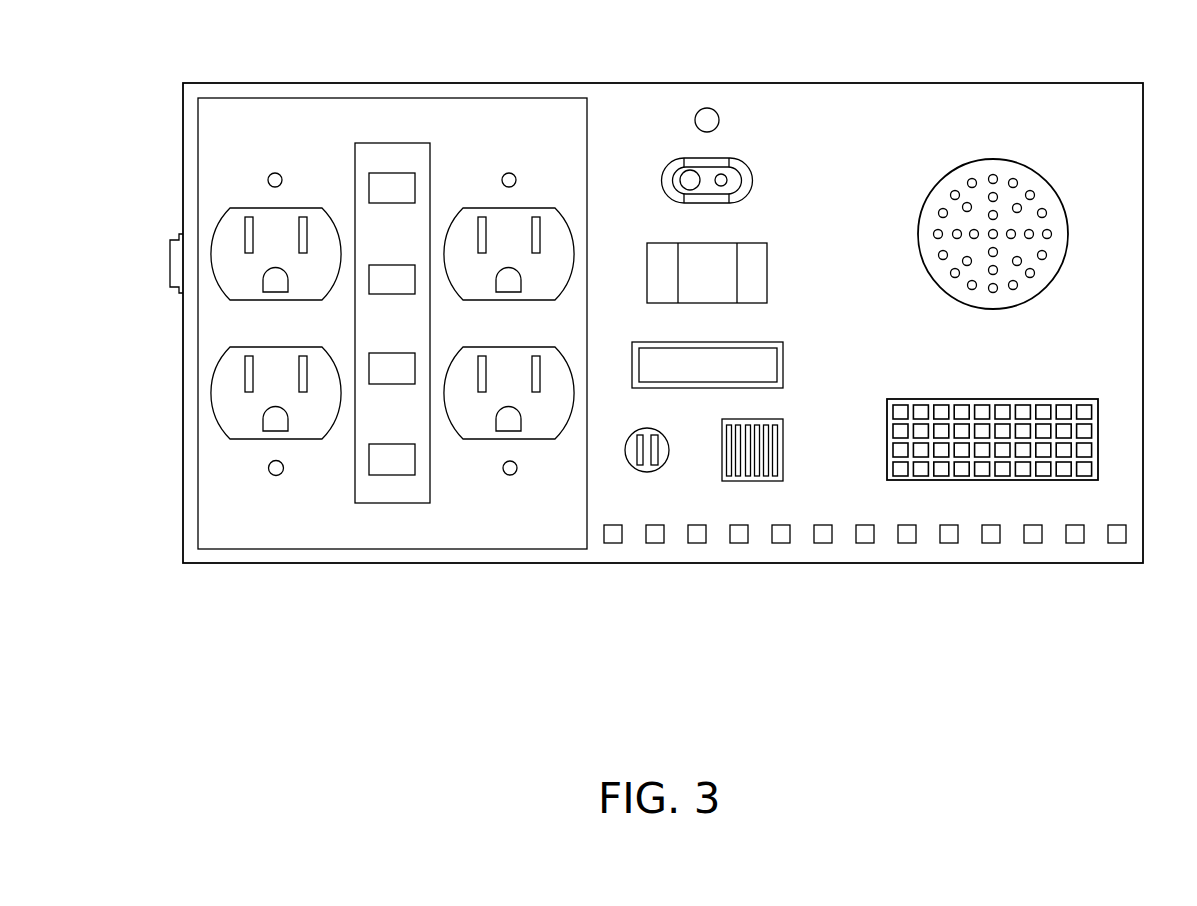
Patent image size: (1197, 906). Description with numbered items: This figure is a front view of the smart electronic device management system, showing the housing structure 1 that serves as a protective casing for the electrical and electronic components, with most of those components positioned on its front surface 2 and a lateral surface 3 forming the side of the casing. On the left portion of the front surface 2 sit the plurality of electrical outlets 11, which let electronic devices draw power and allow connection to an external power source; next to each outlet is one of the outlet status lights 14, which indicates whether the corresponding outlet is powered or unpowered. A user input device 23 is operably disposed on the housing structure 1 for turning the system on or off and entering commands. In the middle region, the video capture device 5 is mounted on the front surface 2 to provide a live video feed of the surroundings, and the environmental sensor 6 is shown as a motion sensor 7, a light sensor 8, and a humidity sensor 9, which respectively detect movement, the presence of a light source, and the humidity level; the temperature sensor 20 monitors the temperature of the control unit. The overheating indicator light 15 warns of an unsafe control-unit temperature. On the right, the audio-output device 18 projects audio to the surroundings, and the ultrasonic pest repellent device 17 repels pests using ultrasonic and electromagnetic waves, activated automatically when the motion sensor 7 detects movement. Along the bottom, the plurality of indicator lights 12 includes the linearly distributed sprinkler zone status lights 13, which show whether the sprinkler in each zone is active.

The housing structure 1 is at (1150, 360).
The front surface 2 is at (1122, 105).
The lateral surface 3 is at (202, 78).
The video capture device 5 is at (742, 180).
The environmental sensor 6 is at (630, 290).
The motion sensor 7 is at (760, 270).
The light sensor 8 is at (770, 362).
The humidity sensor 9 is at (775, 430).
The electrical outlets 11 is at (247, 222).
The indicator lights 12 is at (738, 552).
The sprinkler zone status lights 13 is at (863, 530).
The outlet status lights 14 is at (278, 177).
The overheating indicator light 15 is at (697, 120).
The ultrasonic pest repellent device 17 is at (1005, 410).
The audio-output device 18 is at (1025, 182).
The temperature sensor 20 is at (640, 430).
The user input device 23 is at (172, 265).